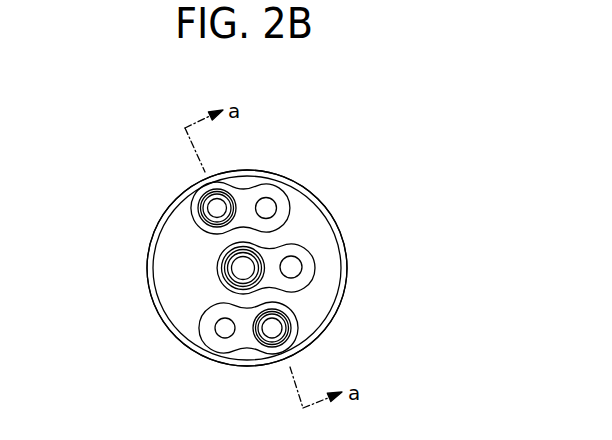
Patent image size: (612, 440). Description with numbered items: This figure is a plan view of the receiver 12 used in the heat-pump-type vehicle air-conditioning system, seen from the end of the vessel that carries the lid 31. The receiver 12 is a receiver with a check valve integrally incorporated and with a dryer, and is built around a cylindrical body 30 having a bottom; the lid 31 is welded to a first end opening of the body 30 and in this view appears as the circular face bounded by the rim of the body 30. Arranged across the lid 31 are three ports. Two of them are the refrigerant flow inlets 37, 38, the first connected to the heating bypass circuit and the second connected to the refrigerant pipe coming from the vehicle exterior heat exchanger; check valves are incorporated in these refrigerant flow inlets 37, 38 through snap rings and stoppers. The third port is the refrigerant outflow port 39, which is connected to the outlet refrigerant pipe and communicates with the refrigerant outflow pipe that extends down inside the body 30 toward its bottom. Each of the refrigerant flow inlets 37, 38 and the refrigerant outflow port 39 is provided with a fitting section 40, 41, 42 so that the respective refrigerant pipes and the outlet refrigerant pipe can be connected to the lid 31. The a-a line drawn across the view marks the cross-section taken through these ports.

The receiver 12 is at (321, 141).
The body 30 is at (165, 328).
The lid 31 is at (170, 243).
The refrigerant flow inlet 37 is at (213, 206).
The refrigerant flow inlet 38 is at (280, 326).
The refrigerant outflow port 39 is at (240, 269).
The fitting section 40 is at (276, 203).
The fitting section 41 is at (236, 338).
The fitting section 42 is at (305, 258).